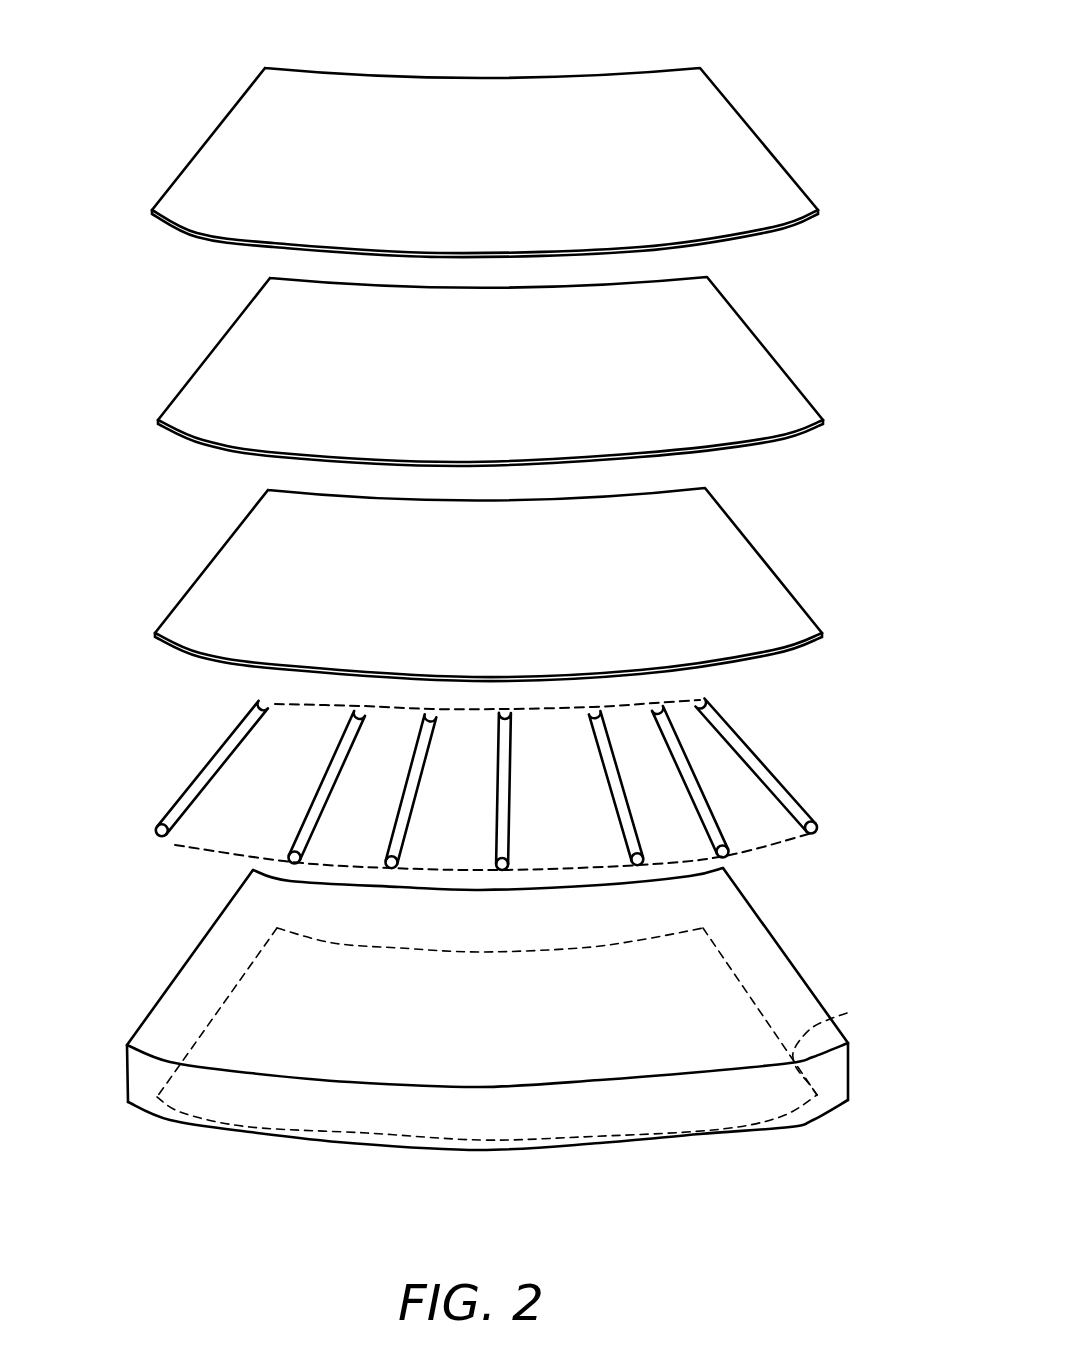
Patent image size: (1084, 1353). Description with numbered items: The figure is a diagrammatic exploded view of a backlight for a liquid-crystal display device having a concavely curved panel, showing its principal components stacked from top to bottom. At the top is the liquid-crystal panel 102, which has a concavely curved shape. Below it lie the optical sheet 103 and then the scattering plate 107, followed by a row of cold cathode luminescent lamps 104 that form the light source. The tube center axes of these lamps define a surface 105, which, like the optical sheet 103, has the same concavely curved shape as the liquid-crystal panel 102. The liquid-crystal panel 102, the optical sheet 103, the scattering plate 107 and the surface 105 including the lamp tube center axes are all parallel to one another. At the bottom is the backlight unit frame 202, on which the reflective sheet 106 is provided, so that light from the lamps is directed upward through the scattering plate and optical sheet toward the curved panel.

The liquid-crystal panel 102 is at (502, 97).
The optical sheet 103 is at (740, 347).
The scattering plate 107 is at (773, 580).
The cold cathode luminescent lamp 104 is at (778, 788).
The surface including the tube center axes of the cold cathode luminescent lamps 105 is at (175, 845).
The backlight unit frame 202 is at (803, 966).
The reflective sheet 106 is at (847, 1013).